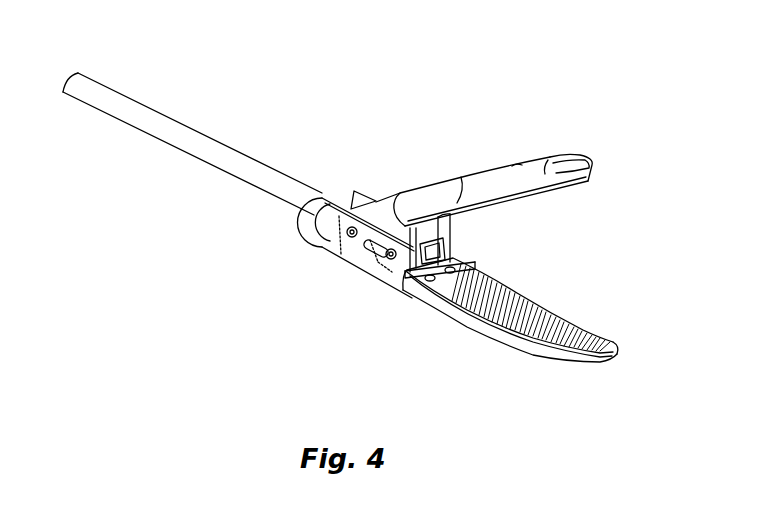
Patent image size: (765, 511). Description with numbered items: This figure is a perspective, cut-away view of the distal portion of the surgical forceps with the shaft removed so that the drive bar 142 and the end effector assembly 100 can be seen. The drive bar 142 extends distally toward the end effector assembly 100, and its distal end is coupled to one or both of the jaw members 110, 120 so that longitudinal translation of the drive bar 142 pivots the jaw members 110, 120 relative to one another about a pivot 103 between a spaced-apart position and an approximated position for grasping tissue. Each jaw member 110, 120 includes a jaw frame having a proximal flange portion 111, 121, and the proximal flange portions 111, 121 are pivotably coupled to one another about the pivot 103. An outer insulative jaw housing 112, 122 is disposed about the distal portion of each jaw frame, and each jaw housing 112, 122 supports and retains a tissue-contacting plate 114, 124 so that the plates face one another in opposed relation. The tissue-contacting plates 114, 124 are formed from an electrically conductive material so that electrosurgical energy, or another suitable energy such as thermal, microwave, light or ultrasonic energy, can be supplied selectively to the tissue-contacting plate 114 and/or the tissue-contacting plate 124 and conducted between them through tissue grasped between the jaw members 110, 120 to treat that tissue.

The end effector assembly 100 is at (348, 93).
The pivot 103 is at (356, 271).
The jaw member 110 is at (617, 159).
The proximal flange portion 111 is at (375, 193).
The outer insulative jaw housing 112 is at (503, 178).
The tissue-contacting plate 114 is at (553, 190).
The jaw member 120 is at (608, 367).
The proximal flange portion 121 is at (365, 258).
The outer insulative jaw housing 122 is at (512, 347).
The tissue-contacting plate 124 is at (563, 320).
The drive bar 142 is at (190, 130).